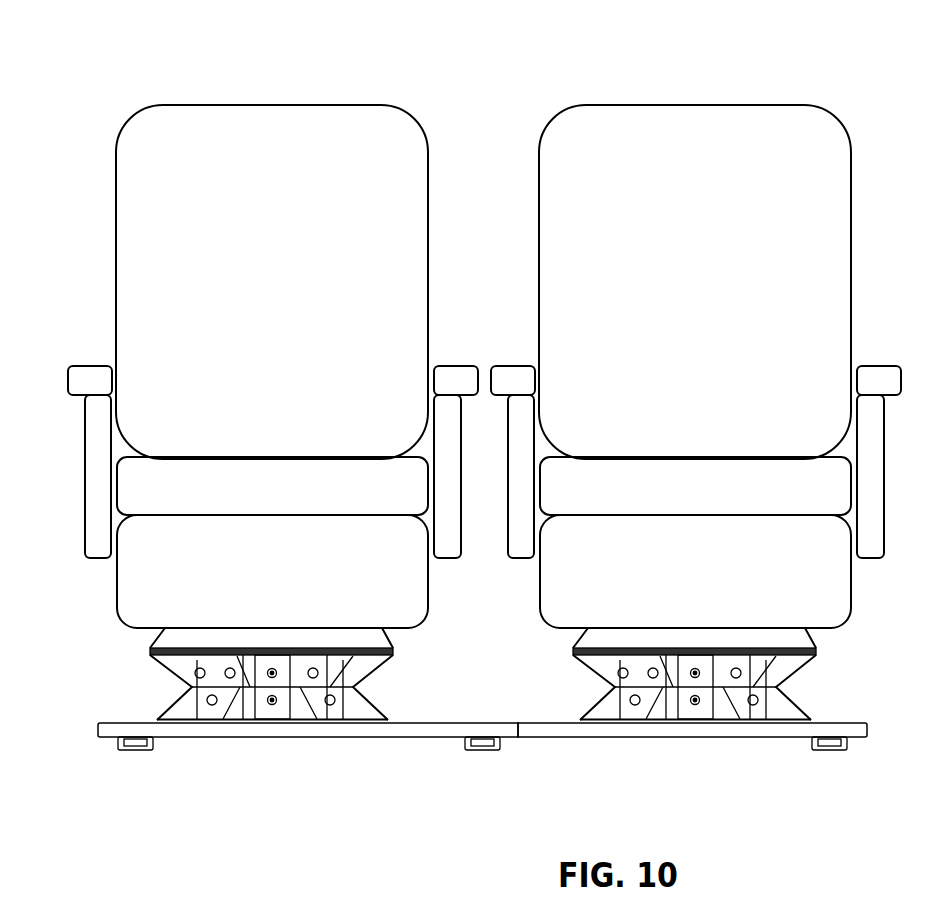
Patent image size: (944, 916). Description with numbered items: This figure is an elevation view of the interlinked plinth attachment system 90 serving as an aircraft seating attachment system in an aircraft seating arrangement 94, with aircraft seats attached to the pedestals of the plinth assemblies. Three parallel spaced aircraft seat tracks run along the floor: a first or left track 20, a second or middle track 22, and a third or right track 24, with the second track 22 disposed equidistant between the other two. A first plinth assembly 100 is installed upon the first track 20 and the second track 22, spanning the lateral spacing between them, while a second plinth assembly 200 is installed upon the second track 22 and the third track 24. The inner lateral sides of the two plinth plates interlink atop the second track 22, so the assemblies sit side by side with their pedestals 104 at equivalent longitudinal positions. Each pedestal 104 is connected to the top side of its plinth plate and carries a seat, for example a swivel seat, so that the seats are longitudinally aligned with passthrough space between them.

The aircraft seating arrangement 94 is at (461, 63).
The interlinked plinth attachment system 90 is at (90, 658).
The pedestal 104 is at (394, 678).
The second plinth assembly 200 is at (256, 767).
The first plinth assembly 100 is at (720, 774).
The third track 24 is at (135, 752).
The second track 22 is at (485, 752).
The first track 20 is at (832, 752).